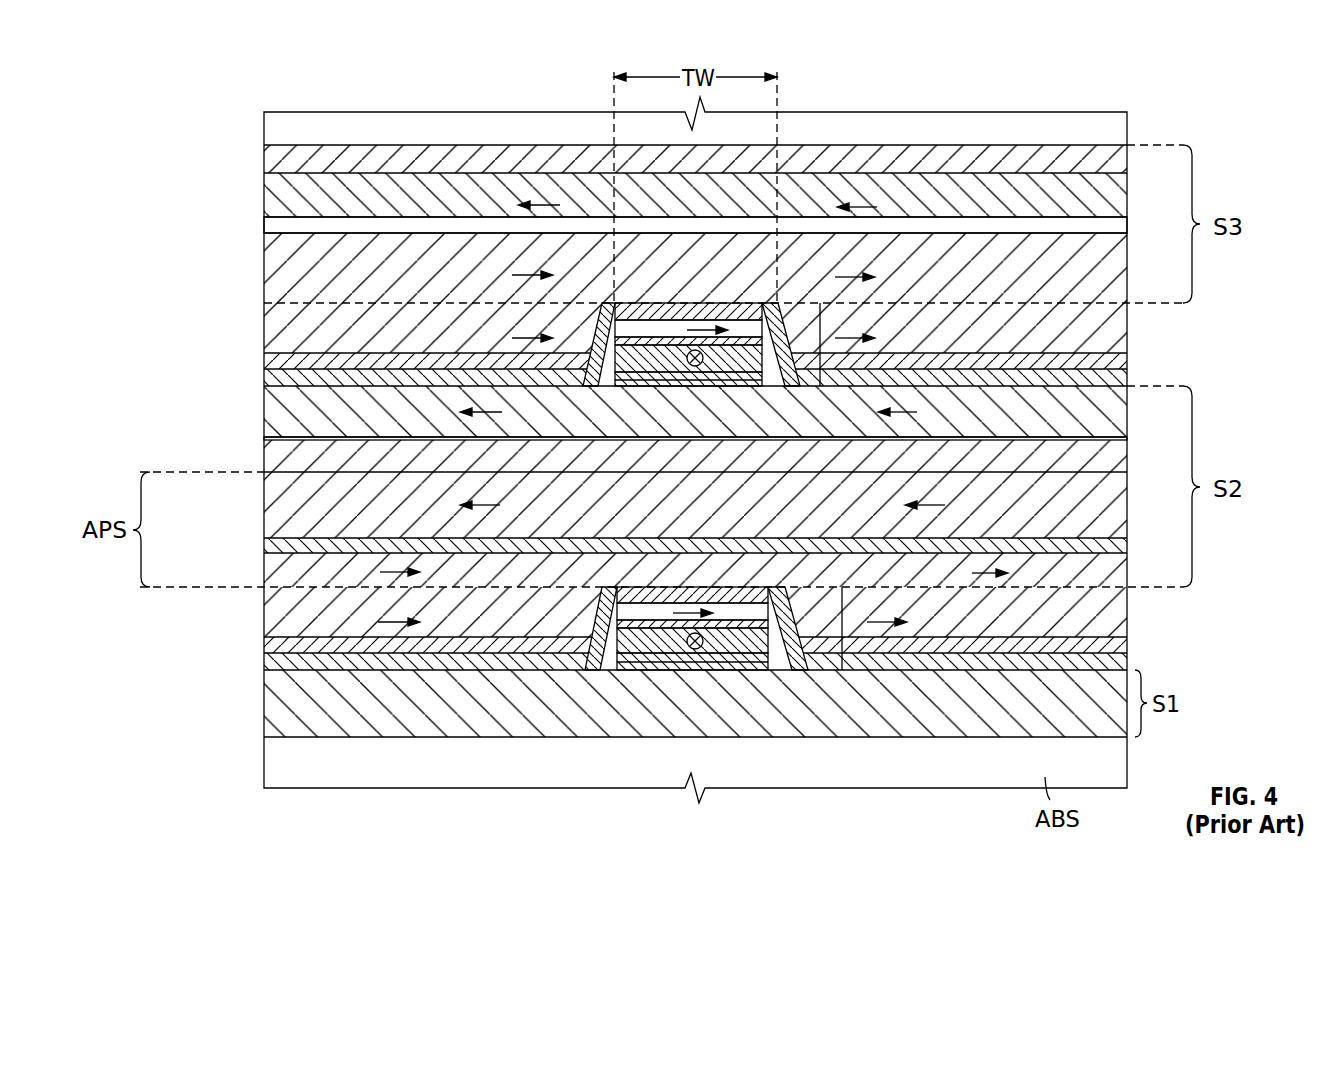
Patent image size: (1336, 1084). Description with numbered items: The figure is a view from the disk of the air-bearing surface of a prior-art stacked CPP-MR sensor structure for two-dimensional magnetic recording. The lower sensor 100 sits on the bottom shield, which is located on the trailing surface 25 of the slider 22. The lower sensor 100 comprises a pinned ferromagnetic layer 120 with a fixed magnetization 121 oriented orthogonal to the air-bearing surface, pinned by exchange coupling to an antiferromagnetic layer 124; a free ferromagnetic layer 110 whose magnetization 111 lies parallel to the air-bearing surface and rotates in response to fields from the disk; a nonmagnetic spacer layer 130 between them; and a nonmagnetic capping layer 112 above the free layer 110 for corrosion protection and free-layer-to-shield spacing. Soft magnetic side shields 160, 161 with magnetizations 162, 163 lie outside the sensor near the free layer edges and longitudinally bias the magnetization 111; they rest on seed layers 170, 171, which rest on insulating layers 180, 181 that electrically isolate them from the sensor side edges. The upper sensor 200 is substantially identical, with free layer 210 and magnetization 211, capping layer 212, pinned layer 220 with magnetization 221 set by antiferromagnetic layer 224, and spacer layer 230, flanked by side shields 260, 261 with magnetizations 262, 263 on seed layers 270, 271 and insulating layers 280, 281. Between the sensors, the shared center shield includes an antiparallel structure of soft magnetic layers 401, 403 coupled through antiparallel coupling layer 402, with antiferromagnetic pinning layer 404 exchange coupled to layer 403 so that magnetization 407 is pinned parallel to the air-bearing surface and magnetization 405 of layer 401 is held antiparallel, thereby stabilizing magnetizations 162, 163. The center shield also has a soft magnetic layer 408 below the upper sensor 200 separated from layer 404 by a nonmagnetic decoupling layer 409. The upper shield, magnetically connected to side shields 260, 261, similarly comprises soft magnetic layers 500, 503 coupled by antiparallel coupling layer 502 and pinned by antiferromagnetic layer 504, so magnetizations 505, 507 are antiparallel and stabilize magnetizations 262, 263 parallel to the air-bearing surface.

The slider 22 is at (332, 778).
The trailing surface 25 is at (275, 712).
The lower sensor 100 is at (778, 645).
The free ferromagnetic layer 110 is at (625, 600).
The magnetization direction of free layer 111 is at (695, 612).
The nonmagnetic capping layer 112 is at (712, 590).
The pinned ferromagnetic layer 120 is at (603, 670).
The magnetization direction of pinned layer 121 is at (700, 662).
The antiferromagnetic layer 124 is at (660, 670).
The nonmagnetic spacer layer 130 is at (738, 652).
The side shield 160 is at (275, 618).
The side shield 161 is at (1110, 602).
The magnetization of side shield 162 is at (404, 620).
The magnetization of side shield 163 is at (888, 620).
The seed layer 170 is at (280, 646).
The seed layer 171 is at (1128, 645).
The insulating layer 180 is at (272, 660).
The insulating layer 181 is at (1128, 663).
The upper sensor 200 is at (769, 338).
The free ferromagnetic layer 210 is at (640, 340).
The magnetization direction of free layer 211 is at (713, 320).
The nonmagnetic capping layer 212 is at (700, 312).
The pinned ferromagnetic layer 220 is at (602, 375).
The magnetization of pinned layer 221 is at (700, 376).
The antiferromagnetic layer 224 is at (650, 385).
The nonmagnetic spacer layer 230 is at (610, 306).
The side shield 260 is at (272, 335).
The side shield 261 is at (1110, 330).
The magnetization of side shield 262 is at (520, 338).
The magnetization of side shield 263 is at (865, 338).
The seed layer 270 is at (447, 357).
The seed layer 271 is at (922, 362).
The insulating layer 280 is at (360, 378).
The insulating layer 281 is at (1018, 378).
The soft magnetic layer 401 is at (328, 581).
The antiparallel coupling layer 402 is at (270, 545).
The soft magnetic layer 403 is at (275, 503).
The antiferromagnetic pinning layer 404 is at (272, 466).
The magnetization of layer 401 405 is at (400, 570).
The magnetization of layer 403 407 is at (478, 503).
The soft magnetic layer 408 is at (272, 400).
The nonmagnetic decoupling layer 409 is at (270, 438).
The soft magnetic layer 500 is at (272, 262).
The antiparallel coupling layer 502 is at (1016, 222).
The soft magnetic layer 503 is at (270, 200).
The antiferromagnetic pinning layer 504 is at (270, 160).
The magnetization of layer 500 505 is at (525, 275).
The magnetization of layer 503 507 is at (540, 205).